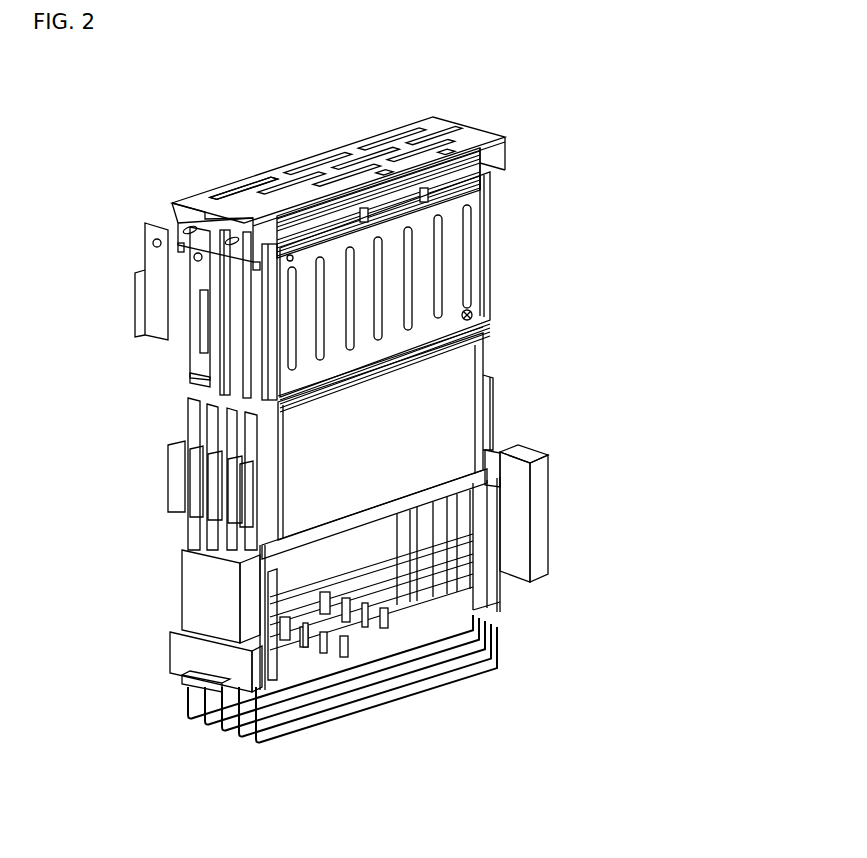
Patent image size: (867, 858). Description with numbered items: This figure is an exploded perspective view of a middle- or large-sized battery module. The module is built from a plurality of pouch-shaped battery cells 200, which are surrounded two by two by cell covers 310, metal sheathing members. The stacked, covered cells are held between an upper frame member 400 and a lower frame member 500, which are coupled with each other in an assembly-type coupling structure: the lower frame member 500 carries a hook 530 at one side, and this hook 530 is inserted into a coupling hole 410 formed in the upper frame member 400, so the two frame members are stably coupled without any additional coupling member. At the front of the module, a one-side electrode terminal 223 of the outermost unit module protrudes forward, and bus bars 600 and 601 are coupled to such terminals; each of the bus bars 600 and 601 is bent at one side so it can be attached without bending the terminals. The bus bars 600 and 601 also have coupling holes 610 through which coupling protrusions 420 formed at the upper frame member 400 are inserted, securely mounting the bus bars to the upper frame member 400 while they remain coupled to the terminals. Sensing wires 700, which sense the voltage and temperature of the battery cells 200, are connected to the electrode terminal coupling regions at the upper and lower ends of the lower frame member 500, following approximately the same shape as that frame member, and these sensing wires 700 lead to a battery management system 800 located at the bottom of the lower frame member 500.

The pouch-shaped battery cell 200 is at (484, 362).
The one-side electrode terminal 223 is at (165, 478).
The cell cover 310 is at (490, 265).
The upper frame member 400 is at (476, 124).
The coupling hole 410 is at (266, 206).
The coupling protrusion 420 is at (180, 211).
The lower frame member 500 is at (187, 604).
The hook 530 is at (256, 546).
The bus bar 600 is at (192, 336).
The bus bar 601 is at (150, 298).
The coupling hole 610 is at (156, 243).
The sensing wire 700 is at (358, 712).
The battery management system (BMS) 800 is at (548, 518).